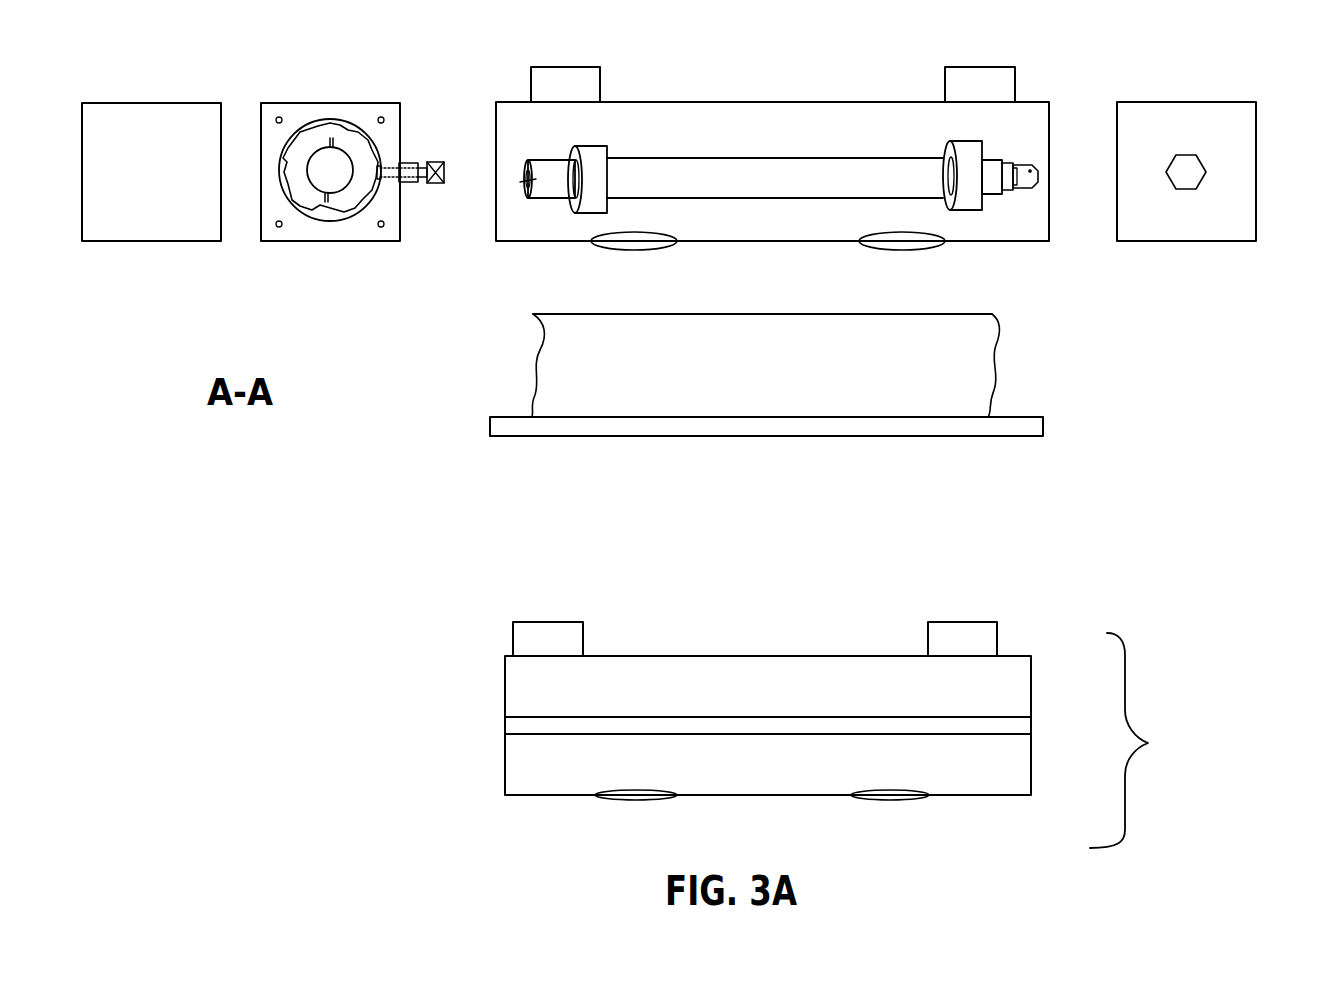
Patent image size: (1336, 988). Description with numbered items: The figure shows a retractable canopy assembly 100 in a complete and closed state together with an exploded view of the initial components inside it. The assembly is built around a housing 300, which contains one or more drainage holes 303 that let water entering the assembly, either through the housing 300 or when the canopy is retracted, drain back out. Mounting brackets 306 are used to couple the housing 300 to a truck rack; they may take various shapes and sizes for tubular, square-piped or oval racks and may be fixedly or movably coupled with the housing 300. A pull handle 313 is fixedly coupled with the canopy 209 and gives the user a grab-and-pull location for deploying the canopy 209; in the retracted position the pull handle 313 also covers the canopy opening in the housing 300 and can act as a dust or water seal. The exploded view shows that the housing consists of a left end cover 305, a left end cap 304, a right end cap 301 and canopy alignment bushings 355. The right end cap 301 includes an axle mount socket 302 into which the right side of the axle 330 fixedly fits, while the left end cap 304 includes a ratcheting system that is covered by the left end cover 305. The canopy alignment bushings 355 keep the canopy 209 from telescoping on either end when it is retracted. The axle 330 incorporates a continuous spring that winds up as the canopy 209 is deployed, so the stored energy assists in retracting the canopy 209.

The retractable canopy assembly 100 is at (1142, 740).
The canopy 209 is at (978, 331).
The housing 300 is at (755, 108).
The right end cap 301 is at (1238, 218).
The hex opening 302 is at (1186, 162).
The drainage hole 303 is at (655, 241).
The left end cap 304 is at (331, 213).
The left end cover 305 is at (160, 213).
The mounting brackets 306 is at (555, 638).
The pull handle 313 is at (1020, 430).
The axle 330 is at (993, 193).
The canopy alignment bushing 355 is at (593, 203).